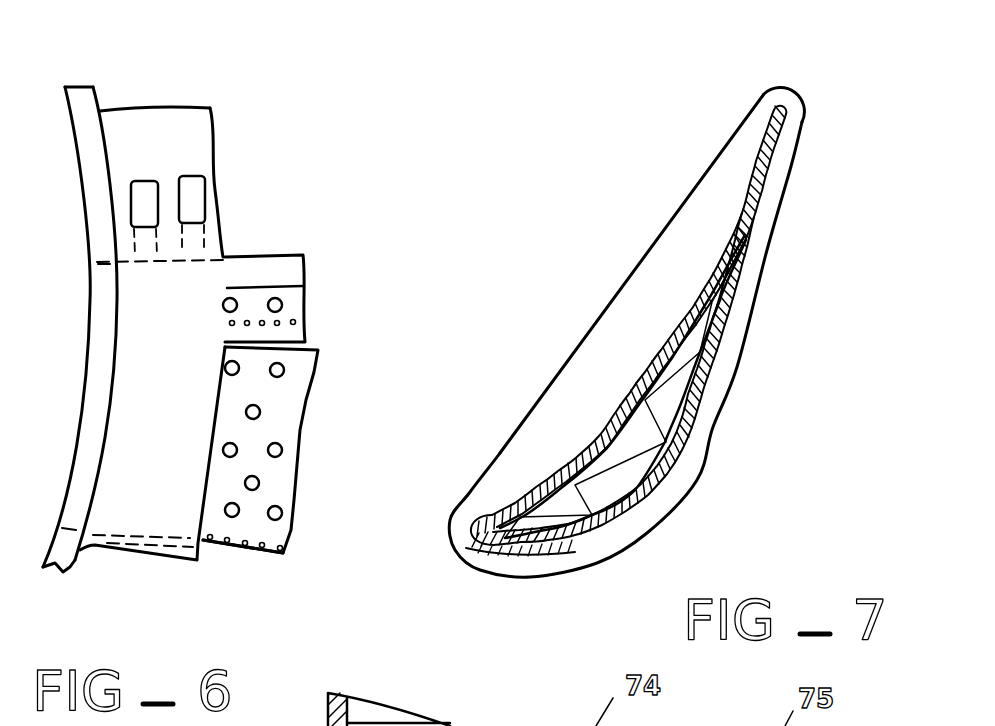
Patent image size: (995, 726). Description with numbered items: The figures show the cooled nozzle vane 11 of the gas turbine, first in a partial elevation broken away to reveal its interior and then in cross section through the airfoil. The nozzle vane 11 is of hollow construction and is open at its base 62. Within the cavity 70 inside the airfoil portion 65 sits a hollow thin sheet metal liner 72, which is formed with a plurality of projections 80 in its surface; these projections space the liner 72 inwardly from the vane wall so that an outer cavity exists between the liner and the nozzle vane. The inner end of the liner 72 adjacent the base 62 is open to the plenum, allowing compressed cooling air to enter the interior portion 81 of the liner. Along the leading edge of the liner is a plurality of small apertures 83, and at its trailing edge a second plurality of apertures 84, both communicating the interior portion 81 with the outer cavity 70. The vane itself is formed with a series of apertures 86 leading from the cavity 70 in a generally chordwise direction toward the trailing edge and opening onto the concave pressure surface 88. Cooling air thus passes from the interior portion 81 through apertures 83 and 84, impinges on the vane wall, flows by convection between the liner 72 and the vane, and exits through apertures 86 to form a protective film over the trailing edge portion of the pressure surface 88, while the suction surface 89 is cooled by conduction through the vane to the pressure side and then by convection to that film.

In FIG. 6, the nozzle vane 11 is at (148, 556).
In FIG. 7, the nozzle vane 11 is at (760, 352).
In FIG. 6, the base 62 is at (80, 86).
In FIG. 7, the base 62 is at (733, 388).
In FIG. 7, the airfoil portion 65 is at (555, 552).
In FIG. 7, the cavity 70 is at (513, 540).
In FIG. 6, the sheet metal liner 72 is at (295, 493).
In FIG. 7, the sheet metal liner 72 is at (565, 530).
In FIG. 6, the projections 80 is at (283, 371).
In FIG. 7, the projections 80 is at (557, 477).
In FIG. 7, the interior portion 81 is at (636, 460).
In FIG. 6, the apertures 83 is at (283, 554).
In FIG. 7, the apertures 83 is at (465, 531).
In FIG. 6, the apertures 84 is at (293, 320).
In FIG. 7, the apertures 84 is at (727, 337).
In FIG. 6, the apertures 86 is at (143, 192).
In FIG. 7, the apertures 86 is at (735, 228).
In FIG. 7, the pressure surface 88 is at (655, 378).
In FIG. 7, the suction surface 89 is at (775, 172).